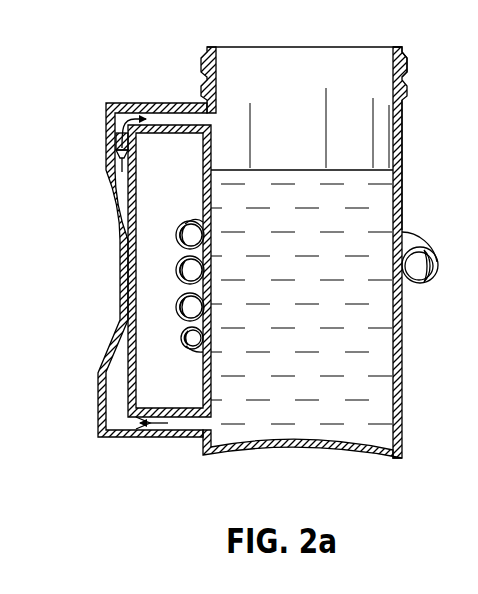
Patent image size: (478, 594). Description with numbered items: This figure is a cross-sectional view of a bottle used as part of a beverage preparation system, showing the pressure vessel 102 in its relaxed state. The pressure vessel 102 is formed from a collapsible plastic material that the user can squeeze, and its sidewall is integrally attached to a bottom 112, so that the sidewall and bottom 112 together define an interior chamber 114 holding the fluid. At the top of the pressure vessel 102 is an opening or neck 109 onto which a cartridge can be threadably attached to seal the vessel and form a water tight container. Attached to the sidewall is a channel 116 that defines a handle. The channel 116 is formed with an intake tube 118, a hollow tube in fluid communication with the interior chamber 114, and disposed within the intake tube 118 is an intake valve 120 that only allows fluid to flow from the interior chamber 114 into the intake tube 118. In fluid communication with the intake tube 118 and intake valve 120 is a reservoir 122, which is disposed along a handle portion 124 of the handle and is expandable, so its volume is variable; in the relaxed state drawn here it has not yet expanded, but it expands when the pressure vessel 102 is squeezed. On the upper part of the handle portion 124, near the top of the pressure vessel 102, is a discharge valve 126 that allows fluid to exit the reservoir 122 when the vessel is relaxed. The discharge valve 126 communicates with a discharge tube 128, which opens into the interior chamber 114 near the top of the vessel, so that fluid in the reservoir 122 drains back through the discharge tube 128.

The pressure vessel 102 is at (404, 110).
The neck 109 is at (400, 48).
The bottom 112 is at (355, 456).
The interior chamber 114 is at (108, 216).
The channel 116 is at (477, 186).
The intake tube 118 is at (187, 447).
The intake valve 120 is at (133, 433).
The reservoir 122 is at (110, 362).
The handle portion 124 is at (130, 352).
The discharge valve 126 is at (116, 140).
The discharge tube 128 is at (160, 103).